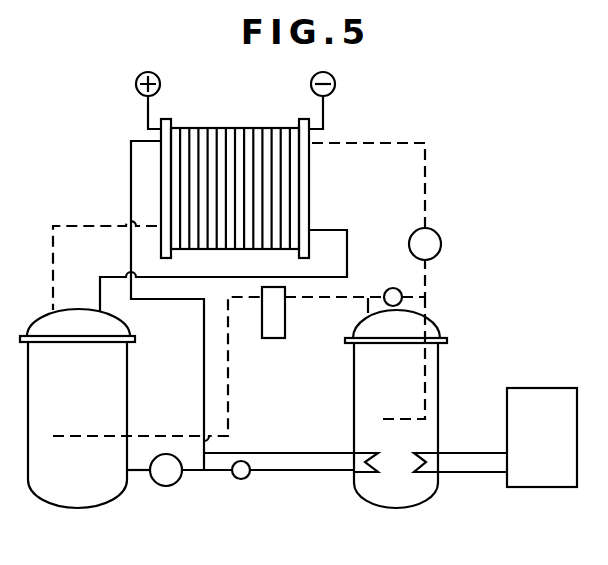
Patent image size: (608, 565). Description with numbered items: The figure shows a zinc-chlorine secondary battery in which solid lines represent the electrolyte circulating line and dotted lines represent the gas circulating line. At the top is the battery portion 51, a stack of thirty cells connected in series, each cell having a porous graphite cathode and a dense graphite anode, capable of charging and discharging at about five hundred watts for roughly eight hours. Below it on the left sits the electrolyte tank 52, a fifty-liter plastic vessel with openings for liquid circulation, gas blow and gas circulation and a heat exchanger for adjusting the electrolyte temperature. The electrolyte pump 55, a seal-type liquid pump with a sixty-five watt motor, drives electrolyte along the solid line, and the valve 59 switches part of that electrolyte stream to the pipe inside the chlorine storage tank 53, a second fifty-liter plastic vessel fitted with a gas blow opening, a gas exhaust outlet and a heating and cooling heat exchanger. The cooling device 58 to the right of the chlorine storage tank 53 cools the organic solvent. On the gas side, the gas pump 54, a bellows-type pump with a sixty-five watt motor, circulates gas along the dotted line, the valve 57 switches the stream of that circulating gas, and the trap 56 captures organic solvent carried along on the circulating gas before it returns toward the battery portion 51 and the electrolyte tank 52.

The battery portion 51 is at (310, 183).
The electrolyte tank 52 is at (80, 497).
The chlorine storage tank 53 is at (400, 498).
The gas pump 54 is at (441, 238).
The electrolyte pump 55 is at (166, 487).
The trap 56 is at (285, 313).
The valve 57 is at (390, 288).
The cooling device 58 is at (545, 478).
The valve 59 is at (241, 480).